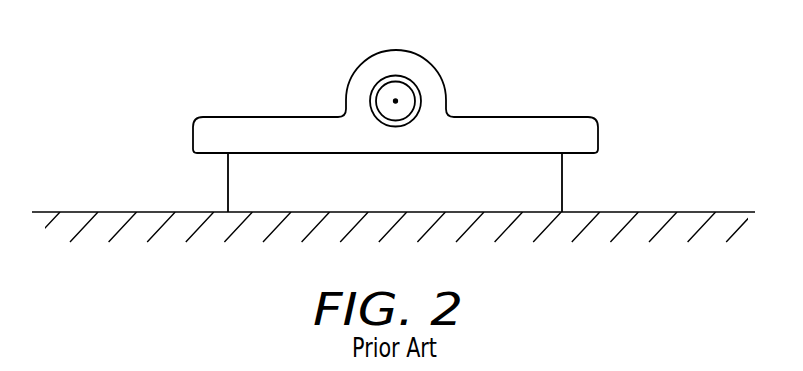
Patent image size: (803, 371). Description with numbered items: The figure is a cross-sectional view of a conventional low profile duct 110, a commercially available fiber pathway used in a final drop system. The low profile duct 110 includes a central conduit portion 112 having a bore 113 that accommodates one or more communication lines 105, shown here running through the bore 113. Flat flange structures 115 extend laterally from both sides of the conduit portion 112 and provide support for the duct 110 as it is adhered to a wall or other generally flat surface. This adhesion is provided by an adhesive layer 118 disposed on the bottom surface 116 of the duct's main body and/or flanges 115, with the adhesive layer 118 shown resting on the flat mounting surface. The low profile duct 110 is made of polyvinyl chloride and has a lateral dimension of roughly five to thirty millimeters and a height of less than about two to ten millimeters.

The communication line 105 is at (390, 88).
The low profile duct 110 is at (427, 52).
The conduit portion 112 is at (443, 80).
The bore 113 is at (370, 100).
The flat flange structure 115 is at (247, 127).
The bottom surface 116 is at (542, 156).
The adhesive layer 118 is at (248, 177).